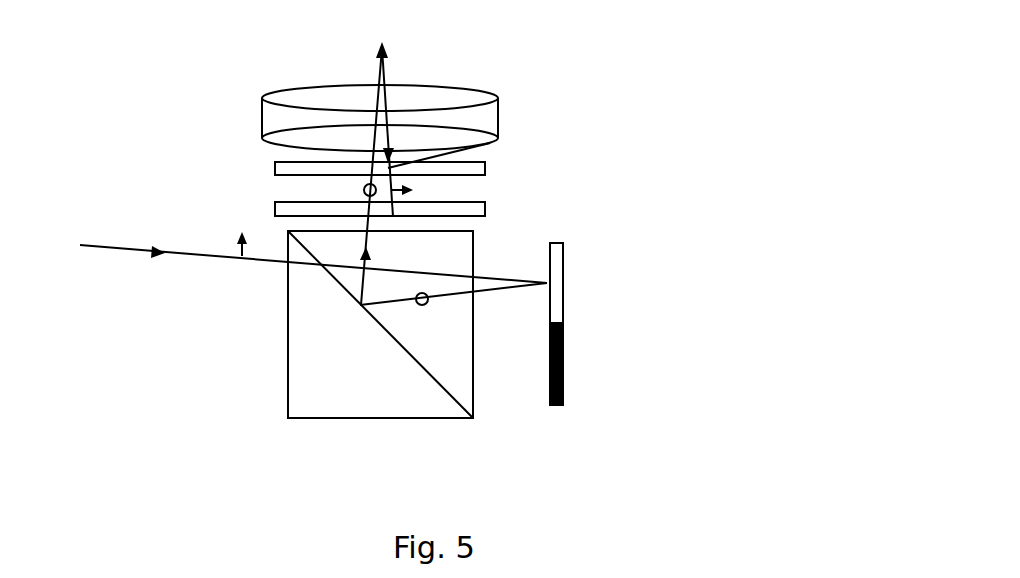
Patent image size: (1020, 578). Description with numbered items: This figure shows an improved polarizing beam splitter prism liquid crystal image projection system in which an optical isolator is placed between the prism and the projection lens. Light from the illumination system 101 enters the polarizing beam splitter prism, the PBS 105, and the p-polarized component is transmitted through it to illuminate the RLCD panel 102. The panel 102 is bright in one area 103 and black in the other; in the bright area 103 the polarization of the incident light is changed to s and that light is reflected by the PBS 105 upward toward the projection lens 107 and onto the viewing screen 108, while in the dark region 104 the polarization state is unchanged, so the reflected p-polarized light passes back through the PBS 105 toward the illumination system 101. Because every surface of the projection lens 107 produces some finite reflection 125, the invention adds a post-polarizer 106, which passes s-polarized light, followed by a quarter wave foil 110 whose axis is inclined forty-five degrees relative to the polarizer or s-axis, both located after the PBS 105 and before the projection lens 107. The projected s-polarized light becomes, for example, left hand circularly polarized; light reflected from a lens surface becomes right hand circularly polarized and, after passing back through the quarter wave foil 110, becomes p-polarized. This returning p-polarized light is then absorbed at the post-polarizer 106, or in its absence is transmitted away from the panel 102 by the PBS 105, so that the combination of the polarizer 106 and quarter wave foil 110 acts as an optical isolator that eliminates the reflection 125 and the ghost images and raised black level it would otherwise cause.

The illumination system 101 is at (301, 270).
The RLCD panel 102 is at (595, 359).
The bright area 103 is at (607, 283).
The dark region 104 is at (607, 364).
The polarizing beam splitter prism (PBS) 105 is at (392, 363).
The post-polarizer 106 is at (497, 215).
The projection lens 107 is at (315, 119).
The viewing screen 108 is at (347, 152).
The quarter wave foil 110 is at (496, 180).
The reflection 125 is at (455, 152).